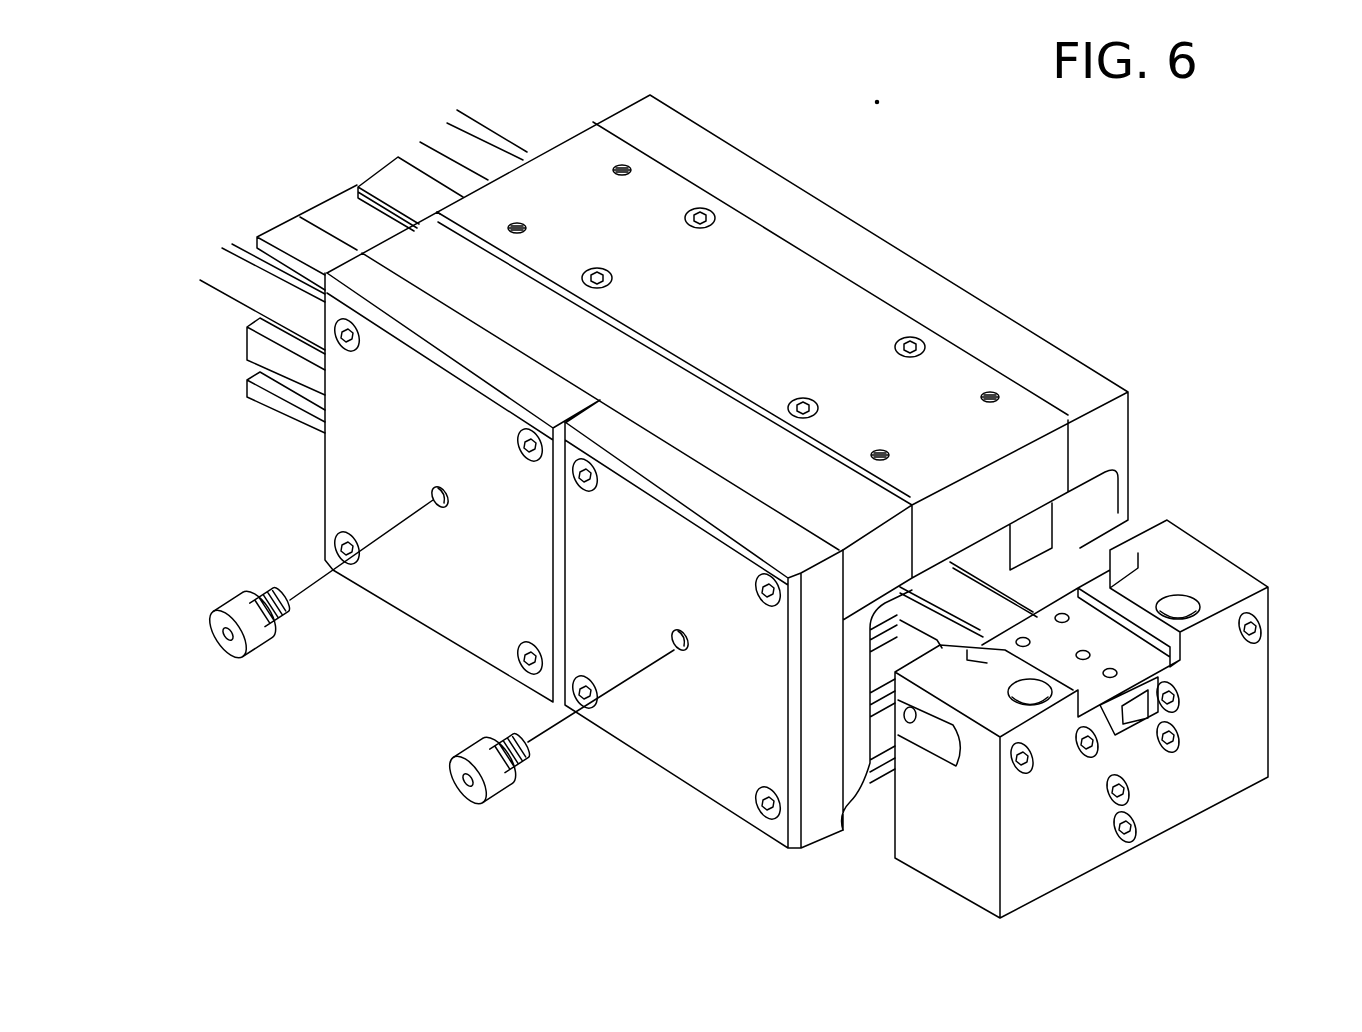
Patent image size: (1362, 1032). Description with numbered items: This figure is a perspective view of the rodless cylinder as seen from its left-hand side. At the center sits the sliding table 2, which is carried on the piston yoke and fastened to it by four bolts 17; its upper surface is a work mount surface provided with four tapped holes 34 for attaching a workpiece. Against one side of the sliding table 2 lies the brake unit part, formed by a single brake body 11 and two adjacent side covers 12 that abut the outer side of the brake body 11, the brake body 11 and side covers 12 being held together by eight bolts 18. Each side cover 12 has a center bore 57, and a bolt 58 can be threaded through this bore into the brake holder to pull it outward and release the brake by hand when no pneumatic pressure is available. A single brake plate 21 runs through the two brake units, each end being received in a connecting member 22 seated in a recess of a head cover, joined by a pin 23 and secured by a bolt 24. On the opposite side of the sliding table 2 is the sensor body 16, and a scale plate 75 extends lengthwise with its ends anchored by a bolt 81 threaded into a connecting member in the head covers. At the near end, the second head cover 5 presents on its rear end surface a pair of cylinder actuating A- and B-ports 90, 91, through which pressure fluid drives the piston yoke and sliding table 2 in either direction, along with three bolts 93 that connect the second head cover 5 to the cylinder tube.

The sliding table 2 is at (740, 300).
The second head cover 5 is at (1190, 793).
The brake body 11 is at (644, 406).
The side cover 12 is at (415, 588).
The sensor body 16 is at (860, 257).
The bolt 17 is at (703, 213).
The bolt 18 is at (350, 342).
The brake plate 21 is at (237, 283).
The connecting member 22 is at (948, 755).
The pin 23 is at (910, 723).
The bolt 24 is at (1022, 772).
The tapped hole 34 is at (622, 165).
The center bore 57 is at (430, 495).
The bolt 58 is at (260, 648).
The scale plate 75 is at (500, 143).
The bolt 81 is at (1262, 630).
The cylinder actuating A-port 90 is at (1112, 800).
The cylinder actuating B-port 91 is at (1180, 745).
The bolt 93 is at (1085, 756).